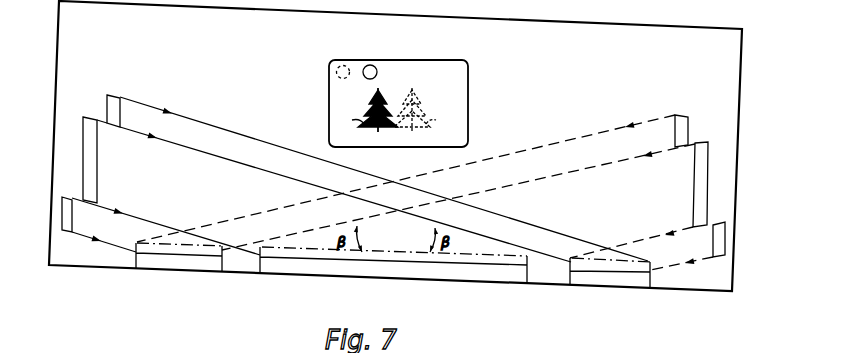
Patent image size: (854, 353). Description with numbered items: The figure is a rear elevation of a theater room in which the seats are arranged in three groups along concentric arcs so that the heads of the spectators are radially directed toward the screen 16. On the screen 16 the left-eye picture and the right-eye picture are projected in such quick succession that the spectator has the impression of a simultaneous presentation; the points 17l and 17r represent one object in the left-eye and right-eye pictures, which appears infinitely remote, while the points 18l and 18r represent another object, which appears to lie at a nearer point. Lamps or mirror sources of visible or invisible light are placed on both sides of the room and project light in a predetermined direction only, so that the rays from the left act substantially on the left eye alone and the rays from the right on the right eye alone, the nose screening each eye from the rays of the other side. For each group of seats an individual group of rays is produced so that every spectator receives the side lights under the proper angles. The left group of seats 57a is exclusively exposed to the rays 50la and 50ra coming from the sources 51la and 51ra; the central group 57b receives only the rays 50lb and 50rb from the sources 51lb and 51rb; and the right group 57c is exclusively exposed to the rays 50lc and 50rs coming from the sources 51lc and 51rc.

The screen 16 is at (468, 92).
The point of object in left-eye picture 17l is at (343, 65).
The point of object in right-eye picture 17r is at (371, 65).
The point of another object in left-eye picture 18l is at (426, 118).
The point of another object in right-eye picture 18r is at (364, 118).
The left-hand light rays for left seat group 50la is at (104, 236).
The left-hand light rays for central seat group 50lb is at (166, 212).
The left-hand light rays for right seat group 50lc is at (372, 179).
The right-hand light rays for left seat group 50ra is at (416, 182).
The right-hand light rays for central seat group 50rb is at (631, 225).
The right-hand light rays for right seat group 50rs is at (681, 256).
The left-hand light source for left seat group 51la is at (47, 214).
The left-hand light source for central seat group 51lb is at (76, 160).
The left-hand light source for right seat group 51lc is at (93, 107).
The right-hand light source for left seat group 51ra is at (688, 118).
The right-hand light source for central seat group 51rb is at (708, 173).
The right-hand light source for right seat group 51rc is at (725, 240).
The left group of seats 57a is at (180, 268).
The central group of seats 57b is at (393, 273).
The right group of seats 57c is at (611, 283).